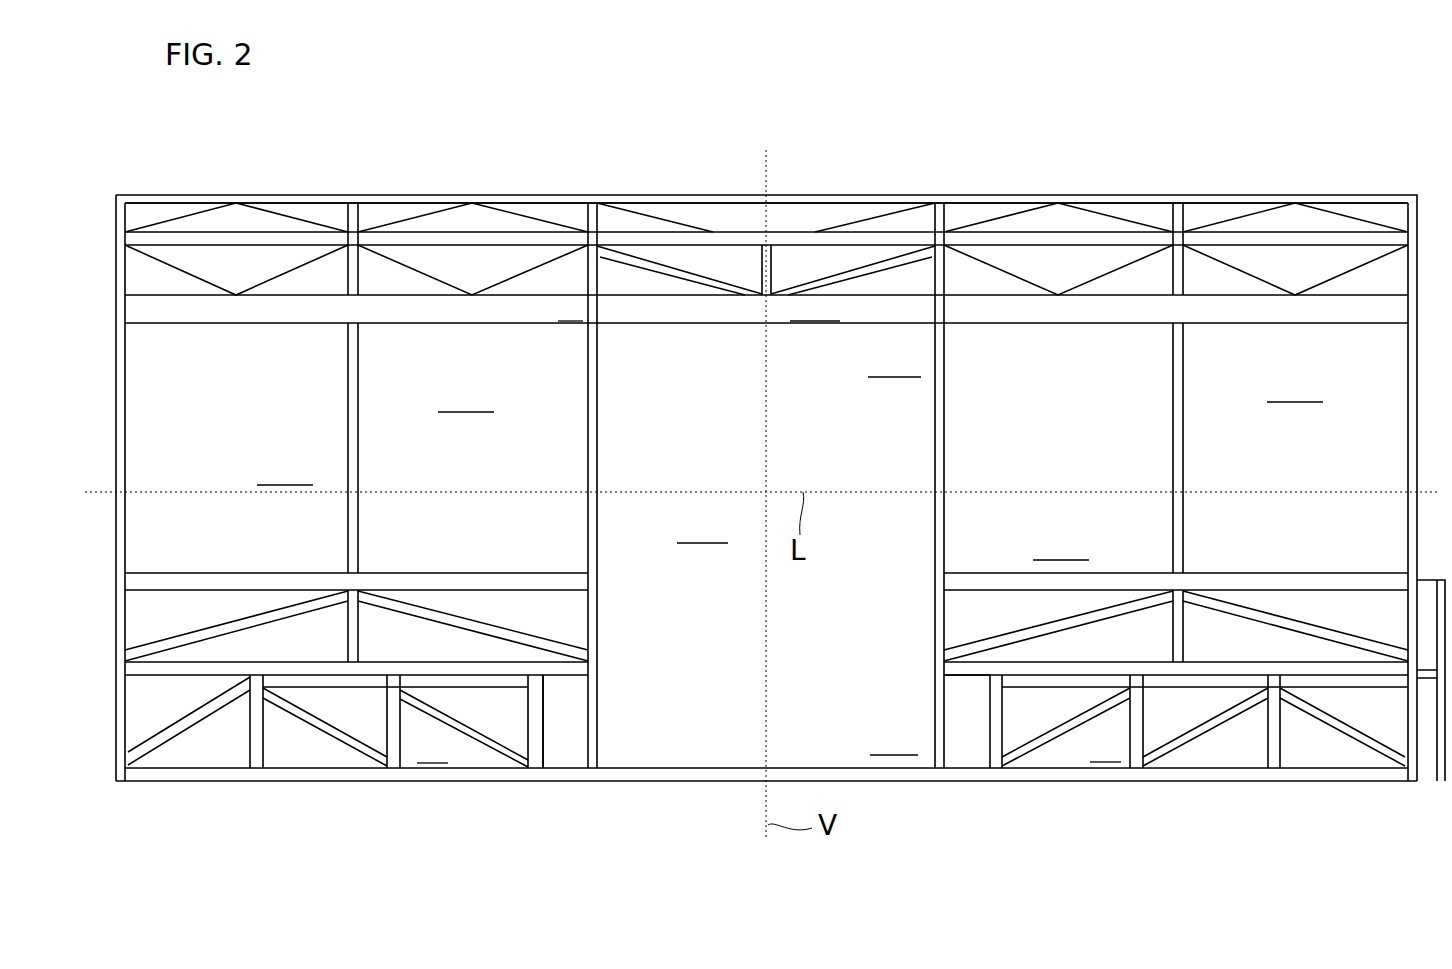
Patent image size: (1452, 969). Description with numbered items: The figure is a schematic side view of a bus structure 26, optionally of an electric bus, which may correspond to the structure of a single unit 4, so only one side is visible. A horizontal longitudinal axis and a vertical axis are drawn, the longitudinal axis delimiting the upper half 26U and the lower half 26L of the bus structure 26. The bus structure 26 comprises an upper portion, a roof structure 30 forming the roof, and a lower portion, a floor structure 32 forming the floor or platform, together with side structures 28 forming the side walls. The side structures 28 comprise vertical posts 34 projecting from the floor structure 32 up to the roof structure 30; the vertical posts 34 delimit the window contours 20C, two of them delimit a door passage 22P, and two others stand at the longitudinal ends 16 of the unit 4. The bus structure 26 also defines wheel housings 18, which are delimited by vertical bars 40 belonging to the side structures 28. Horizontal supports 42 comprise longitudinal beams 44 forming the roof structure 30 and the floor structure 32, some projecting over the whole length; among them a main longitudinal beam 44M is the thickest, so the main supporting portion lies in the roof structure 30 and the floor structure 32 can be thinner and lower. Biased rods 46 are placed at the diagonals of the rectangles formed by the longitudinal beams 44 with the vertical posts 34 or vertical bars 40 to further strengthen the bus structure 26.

The unit 4 is at (367, 150).
The longitudinal ends 16 is at (127, 453).
The wheel housings 18 is at (835, 726).
The window contours 20C is at (790, 432).
The door passage 22P is at (762, 495).
The bus structure 26 is at (640, 175).
The upper half 26U is at (766, 305).
The lower half 26L is at (766, 721).
The side structures 28 is at (443, 790).
The roof structure 30 is at (972, 172).
The floor structure 32 is at (686, 810).
The vertical posts 34 is at (362, 285).
The vertical bars 40 is at (541, 745).
The horizontal supports 42 is at (875, 178).
The longitudinal beams 44 is at (1370, 196).
The main longitudinal beam 44M is at (801, 283).
The biased rods 46 is at (1117, 268).